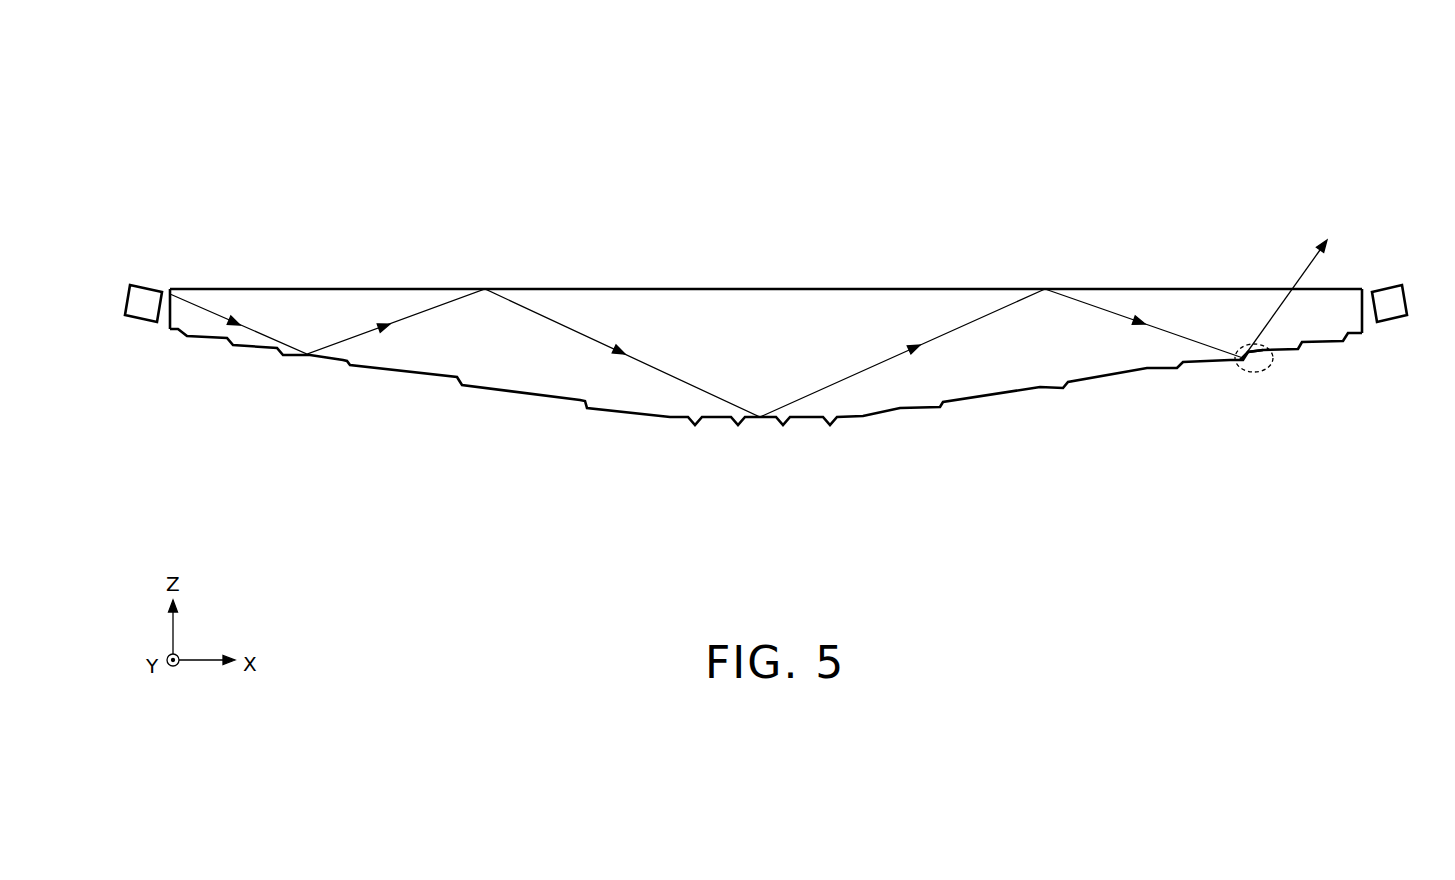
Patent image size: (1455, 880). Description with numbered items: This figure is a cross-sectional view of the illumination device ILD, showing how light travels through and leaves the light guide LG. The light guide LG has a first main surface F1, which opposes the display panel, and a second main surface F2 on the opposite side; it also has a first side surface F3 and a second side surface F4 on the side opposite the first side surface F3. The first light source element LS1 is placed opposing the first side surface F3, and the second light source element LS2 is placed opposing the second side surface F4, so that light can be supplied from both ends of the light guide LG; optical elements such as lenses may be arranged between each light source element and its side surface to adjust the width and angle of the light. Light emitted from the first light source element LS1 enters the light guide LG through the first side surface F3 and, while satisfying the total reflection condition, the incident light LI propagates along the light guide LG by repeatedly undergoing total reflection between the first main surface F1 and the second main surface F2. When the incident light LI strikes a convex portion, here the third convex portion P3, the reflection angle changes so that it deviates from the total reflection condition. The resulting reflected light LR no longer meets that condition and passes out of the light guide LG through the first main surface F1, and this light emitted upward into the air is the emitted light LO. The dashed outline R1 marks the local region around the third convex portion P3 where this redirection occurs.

The illumination device ILD is at (1170, 108).
The light guide LG is at (697, 302).
The first main surface F1 is at (922, 270).
The second main surface F2 is at (411, 390).
The first side surface F3 is at (160, 332).
The second side surface F4 is at (1374, 335).
The first light source element LS1 is at (130, 300).
The second light source element LS2 is at (1400, 300).
The incident light LI is at (195, 307).
The reflected light LR is at (1253, 325).
The emitted light LO is at (1293, 270).
The third convex portion P3 is at (1243, 363).
The region R1 is at (1265, 370).